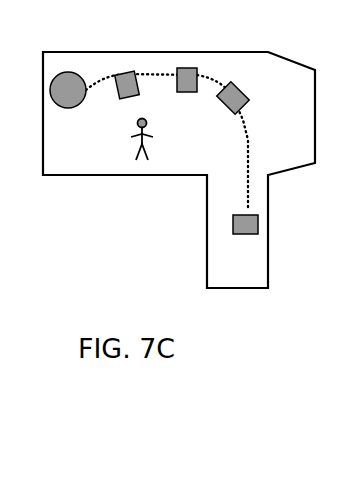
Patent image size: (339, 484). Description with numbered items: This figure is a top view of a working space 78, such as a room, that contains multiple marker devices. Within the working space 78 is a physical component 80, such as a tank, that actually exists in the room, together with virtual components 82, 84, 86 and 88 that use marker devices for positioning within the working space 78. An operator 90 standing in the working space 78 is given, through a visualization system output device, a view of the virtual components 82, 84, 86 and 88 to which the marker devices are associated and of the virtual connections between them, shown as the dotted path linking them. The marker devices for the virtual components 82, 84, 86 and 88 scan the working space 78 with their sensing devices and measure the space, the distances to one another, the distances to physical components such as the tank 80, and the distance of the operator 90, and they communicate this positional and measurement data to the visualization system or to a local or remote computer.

The working space 78 is at (184, 195).
The physical component 80 is at (68, 70).
The virtual component 82 is at (125, 69).
The virtual component 84 is at (187, 66).
The virtual component 86 is at (248, 79).
The virtual component 88 is at (262, 226).
The operator 90 is at (130, 146).